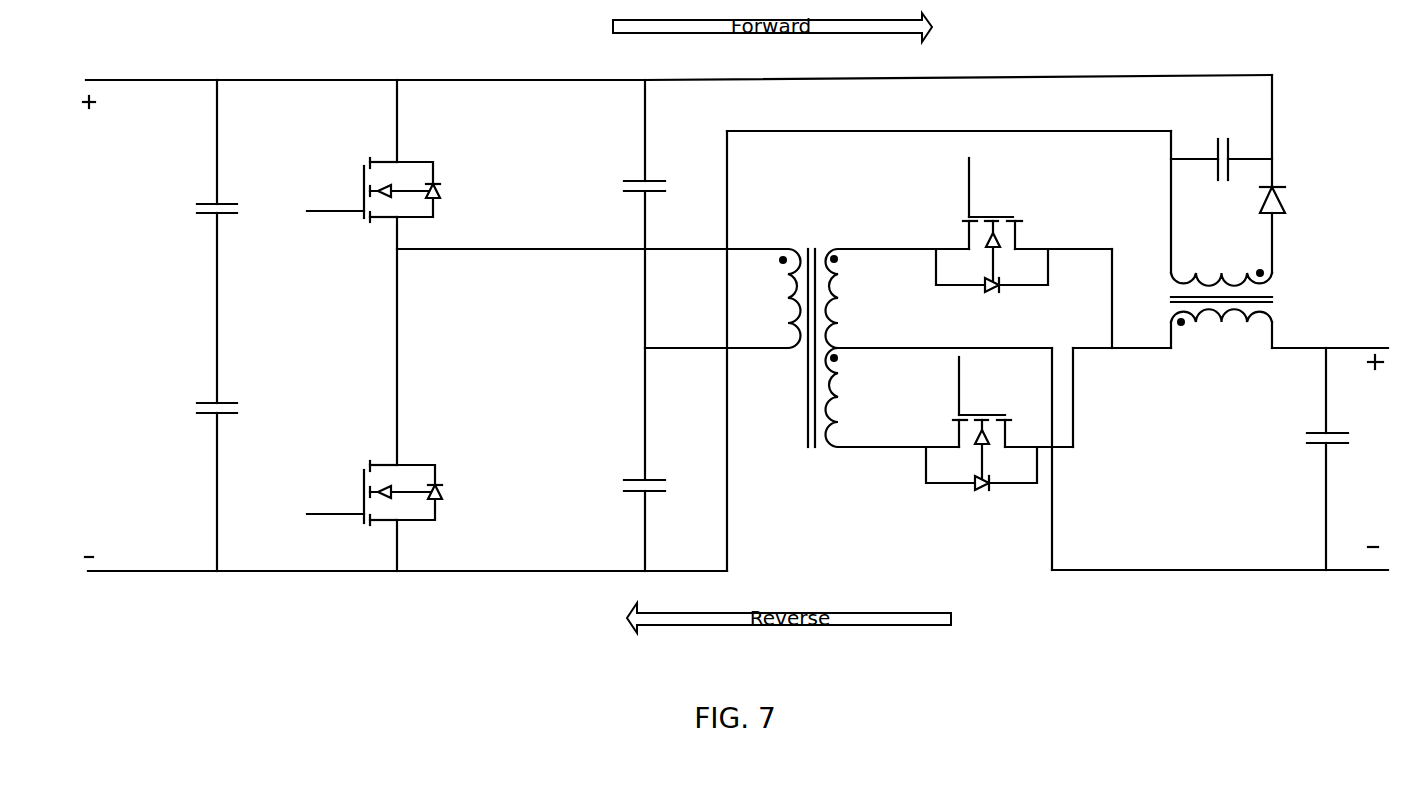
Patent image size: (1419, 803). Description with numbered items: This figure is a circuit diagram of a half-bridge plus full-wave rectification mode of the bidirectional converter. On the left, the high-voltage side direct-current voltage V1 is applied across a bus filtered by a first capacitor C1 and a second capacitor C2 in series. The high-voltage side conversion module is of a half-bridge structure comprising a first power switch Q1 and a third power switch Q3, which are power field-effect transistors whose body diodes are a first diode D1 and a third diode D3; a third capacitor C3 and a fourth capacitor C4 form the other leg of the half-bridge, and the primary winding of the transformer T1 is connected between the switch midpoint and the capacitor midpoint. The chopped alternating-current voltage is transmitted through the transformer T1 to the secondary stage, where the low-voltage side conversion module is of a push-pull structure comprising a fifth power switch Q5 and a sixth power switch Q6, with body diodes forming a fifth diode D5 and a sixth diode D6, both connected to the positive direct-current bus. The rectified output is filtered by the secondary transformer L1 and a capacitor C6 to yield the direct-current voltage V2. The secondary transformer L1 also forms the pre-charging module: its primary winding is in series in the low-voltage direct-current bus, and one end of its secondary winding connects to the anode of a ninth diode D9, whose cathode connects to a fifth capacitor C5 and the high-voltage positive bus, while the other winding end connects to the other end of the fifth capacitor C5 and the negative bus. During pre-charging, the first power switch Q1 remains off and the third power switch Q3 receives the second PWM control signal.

The high-voltage side direct-current voltage V1 is at (96, 326).
The direct-current voltage V2 is at (1374, 451).
The first capacitor C1 is at (234, 241).
The second capacitor C2 is at (234, 482).
The third capacitor C3 is at (660, 280).
The fourth capacitor C4 is at (660, 522).
The fifth capacitor C5 is at (1221, 202).
The output capacitor C6 is at (1310, 459).
The first power switch Q1 is at (370, 184).
The third power switch Q3 is at (371, 486).
The fifth power switch Q5 is at (966, 221).
The sixth power switch Q6 is at (956, 422).
The first diode D1 is at (435, 189).
The third diode D3 is at (436, 492).
The fifth diode D5 is at (992, 285).
The sixth diode D6 is at (981, 483).
The ninth diode D9 is at (1290, 174).
The transformer T1 is at (808, 330).
The secondary transformer L1 is at (1206, 308).